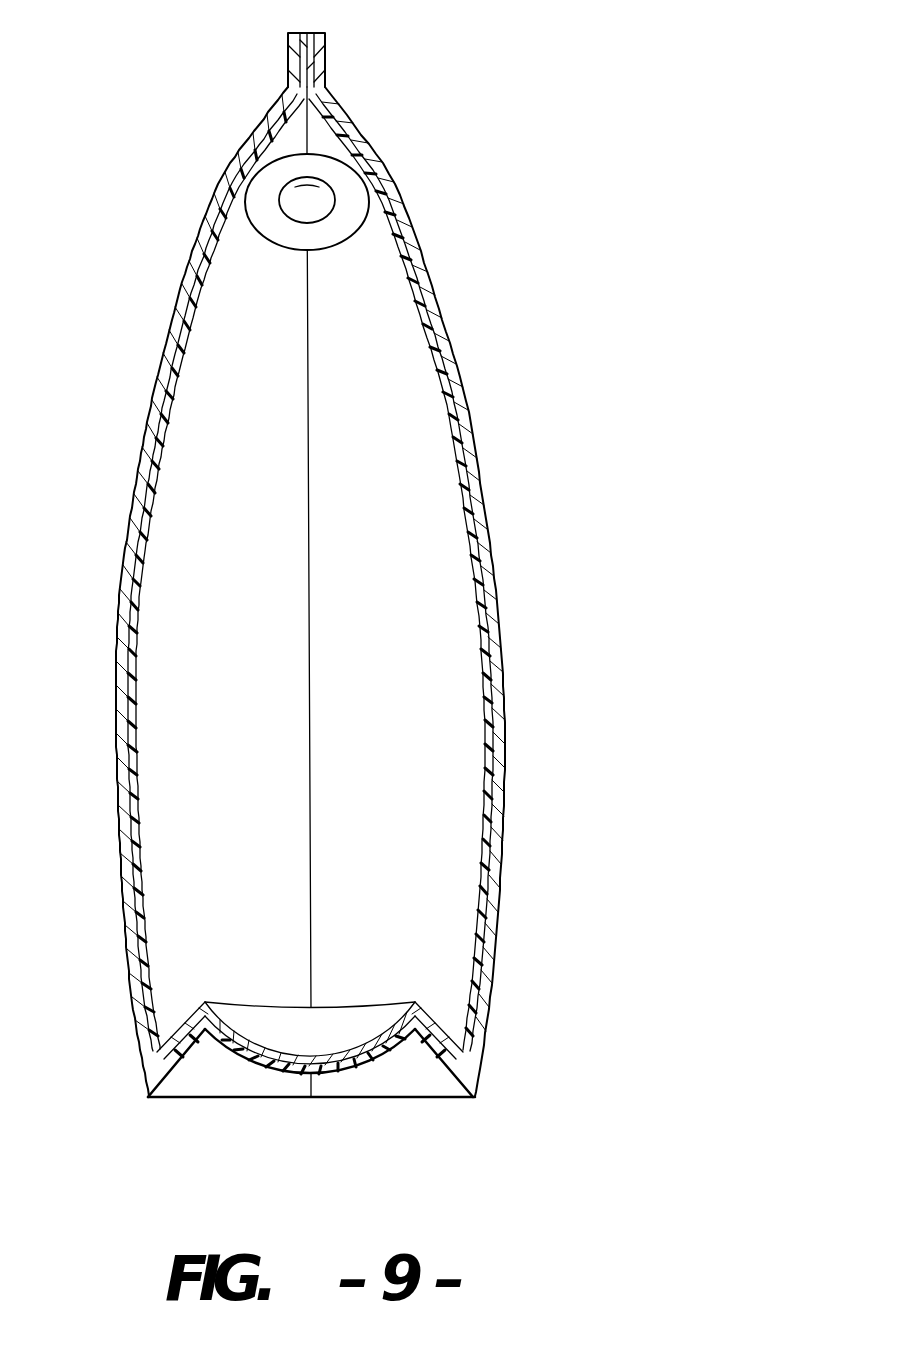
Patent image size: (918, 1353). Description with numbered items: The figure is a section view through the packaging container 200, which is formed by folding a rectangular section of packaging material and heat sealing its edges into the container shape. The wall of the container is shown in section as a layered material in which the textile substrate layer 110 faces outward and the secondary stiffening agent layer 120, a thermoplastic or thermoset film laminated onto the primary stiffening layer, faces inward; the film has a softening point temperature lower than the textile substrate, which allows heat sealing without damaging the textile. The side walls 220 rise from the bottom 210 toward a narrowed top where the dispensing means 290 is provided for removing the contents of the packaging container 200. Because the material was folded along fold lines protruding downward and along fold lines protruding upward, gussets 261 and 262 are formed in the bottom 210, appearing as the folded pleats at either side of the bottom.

The packaging container 200 is at (558, 110).
The textile substrate layer 110 is at (182, 283).
The secondary stiffening agent layer 120 is at (155, 473).
The side walls 220 is at (400, 397).
The dispensing means 290 is at (322, 155).
The bottom 210 is at (351, 1068).
The gusset 261 is at (411, 1042).
The gusset 262 is at (209, 1042).